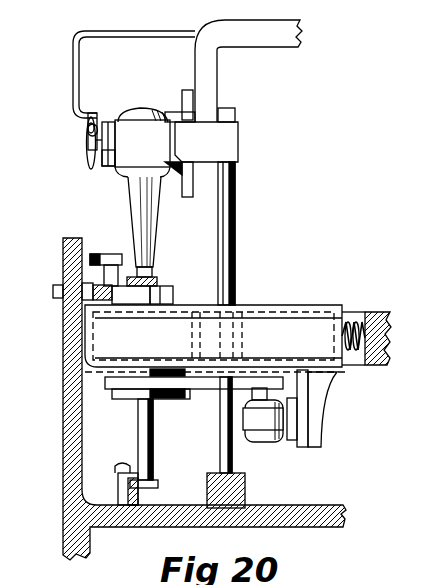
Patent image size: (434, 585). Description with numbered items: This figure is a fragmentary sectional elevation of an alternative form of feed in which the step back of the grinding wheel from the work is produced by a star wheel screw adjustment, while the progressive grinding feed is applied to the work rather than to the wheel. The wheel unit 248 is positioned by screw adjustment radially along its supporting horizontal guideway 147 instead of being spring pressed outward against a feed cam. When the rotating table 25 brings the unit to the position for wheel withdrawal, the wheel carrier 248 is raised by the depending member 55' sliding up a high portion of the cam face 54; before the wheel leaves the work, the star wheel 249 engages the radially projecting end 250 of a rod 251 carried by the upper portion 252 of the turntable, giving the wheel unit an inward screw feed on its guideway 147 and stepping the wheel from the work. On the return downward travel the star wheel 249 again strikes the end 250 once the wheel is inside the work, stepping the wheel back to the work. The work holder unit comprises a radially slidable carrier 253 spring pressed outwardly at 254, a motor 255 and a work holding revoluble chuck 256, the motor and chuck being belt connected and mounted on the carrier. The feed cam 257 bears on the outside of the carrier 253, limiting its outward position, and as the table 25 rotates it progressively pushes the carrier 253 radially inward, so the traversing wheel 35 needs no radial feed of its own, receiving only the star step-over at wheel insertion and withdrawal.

The rod 251 is at (73, 70).
The radially projecting end of rod 250 is at (95, 113).
The upper portion of the turntable 252 is at (213, 50).
The star wheel 249 is at (87, 148).
The horizontal guideway 147 is at (103, 168).
The wheel unit 248 is at (131, 173).
The depending member 55' is at (243, 233).
The traversing wheel 35 is at (150, 281).
The feed cam 257 is at (80, 298).
The radially slidable carrier 253 is at (215, 338).
The spring 254 is at (355, 320).
The rotating table 25 is at (378, 366).
The work holding revoluble chuck 256 is at (128, 396).
The motor 255 is at (270, 415).
The cam face 54 is at (246, 478).